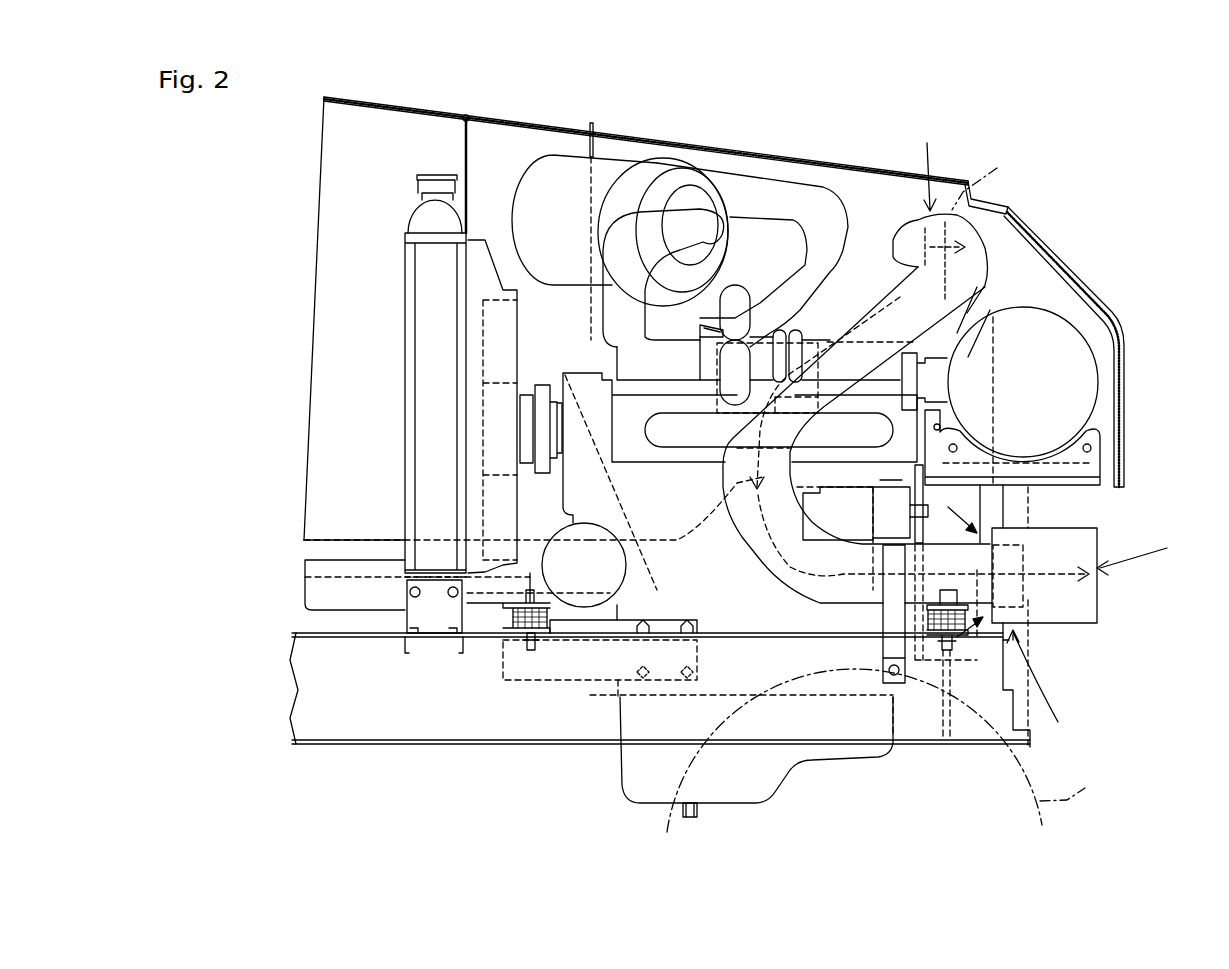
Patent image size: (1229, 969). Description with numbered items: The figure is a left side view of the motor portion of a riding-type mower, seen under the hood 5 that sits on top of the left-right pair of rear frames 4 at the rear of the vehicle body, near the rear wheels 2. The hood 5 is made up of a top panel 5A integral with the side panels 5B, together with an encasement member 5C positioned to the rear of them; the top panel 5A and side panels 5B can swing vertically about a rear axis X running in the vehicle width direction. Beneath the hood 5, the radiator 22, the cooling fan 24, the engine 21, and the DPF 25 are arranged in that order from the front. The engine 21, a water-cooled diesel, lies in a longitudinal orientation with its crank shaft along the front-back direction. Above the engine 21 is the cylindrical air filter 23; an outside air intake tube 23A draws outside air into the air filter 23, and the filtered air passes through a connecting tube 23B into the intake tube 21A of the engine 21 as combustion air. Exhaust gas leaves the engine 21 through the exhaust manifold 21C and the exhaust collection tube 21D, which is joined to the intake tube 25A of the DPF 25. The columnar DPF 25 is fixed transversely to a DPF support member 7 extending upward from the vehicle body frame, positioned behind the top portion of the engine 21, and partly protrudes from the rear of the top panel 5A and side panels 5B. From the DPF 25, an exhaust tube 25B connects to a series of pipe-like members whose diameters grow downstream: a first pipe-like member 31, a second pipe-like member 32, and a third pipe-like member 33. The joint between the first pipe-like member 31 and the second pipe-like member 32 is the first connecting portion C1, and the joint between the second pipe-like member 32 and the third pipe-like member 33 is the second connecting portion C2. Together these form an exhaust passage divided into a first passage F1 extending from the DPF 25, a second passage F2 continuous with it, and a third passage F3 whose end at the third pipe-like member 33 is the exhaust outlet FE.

The rear wheels 2 is at (1070, 789).
The rear frames 4 is at (435, 744).
The hood 5 is at (863, 158).
The top panel 5A is at (830, 157).
The side panels 5B is at (350, 258).
The encasement member 5C is at (1072, 268).
The DPF support member 7 is at (1090, 472).
The engine 21 is at (620, 405).
The intake tube 21A is at (735, 304).
The exhaust manifold 21C is at (677, 432).
The exhaust collection tube 21D is at (892, 387).
The radiator 22 is at (403, 400).
The air filter 23 is at (540, 187).
The outside air intake tube 23A is at (770, 197).
The connecting tube 23B is at (610, 273).
The cooling fan 24 is at (452, 337).
The DPF 25 is at (1097, 373).
The intake tube of the DPF 25A is at (927, 380).
The exhaust tube of the DPF 25B is at (953, 317).
The first pipe-like member 31 is at (920, 214).
The second pipe-like member 32 is at (753, 517).
The third pipe-like member 33 is at (1063, 613).
The first connecting portion C1 is at (925, 165).
The second connecting portion C2 is at (1042, 690).
The first passage F1 is at (1003, 182).
The second passage F2 is at (843, 297).
The third passage F3 is at (854, 739).
The exhaust outlet FE is at (1146, 555).
The rear axis X is at (938, 426).